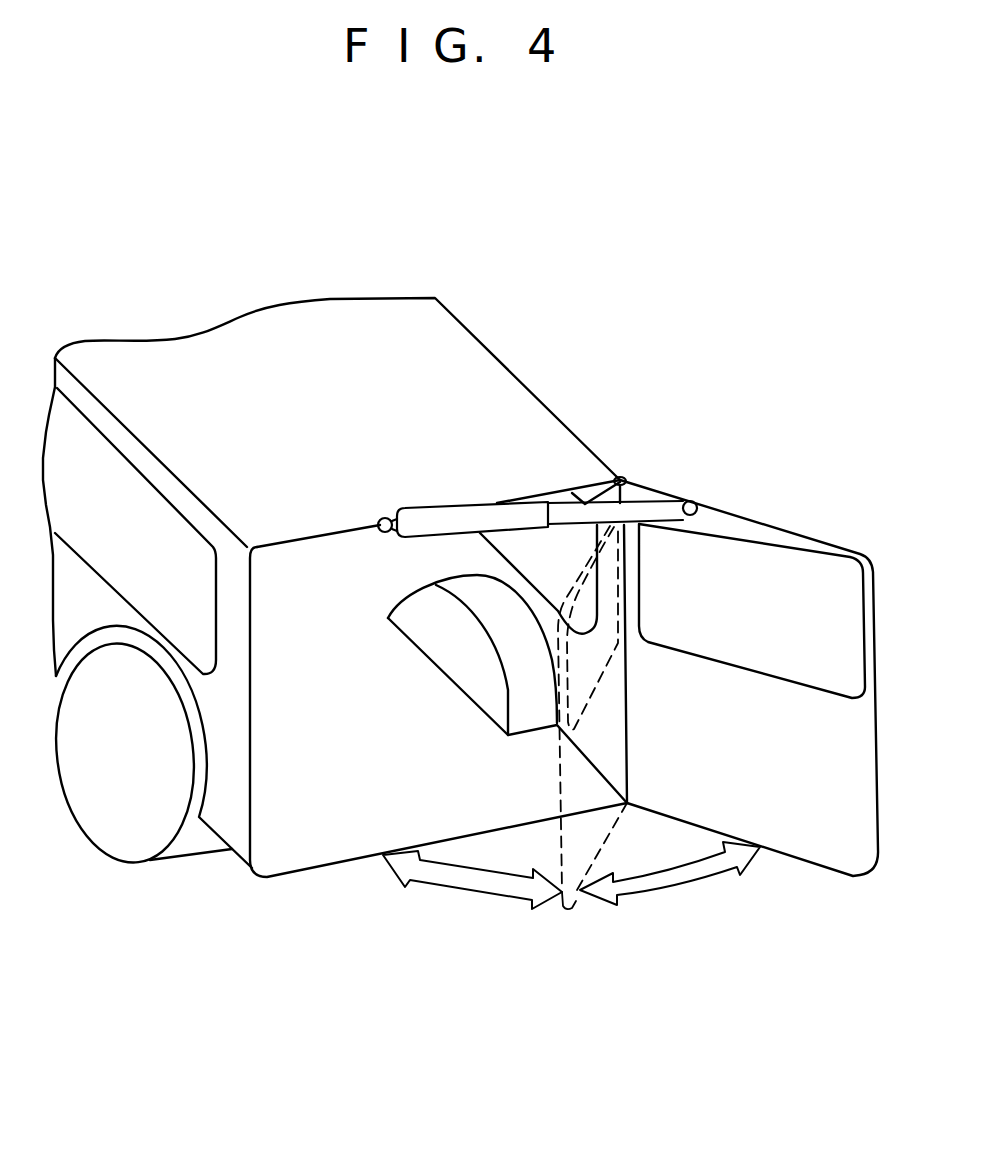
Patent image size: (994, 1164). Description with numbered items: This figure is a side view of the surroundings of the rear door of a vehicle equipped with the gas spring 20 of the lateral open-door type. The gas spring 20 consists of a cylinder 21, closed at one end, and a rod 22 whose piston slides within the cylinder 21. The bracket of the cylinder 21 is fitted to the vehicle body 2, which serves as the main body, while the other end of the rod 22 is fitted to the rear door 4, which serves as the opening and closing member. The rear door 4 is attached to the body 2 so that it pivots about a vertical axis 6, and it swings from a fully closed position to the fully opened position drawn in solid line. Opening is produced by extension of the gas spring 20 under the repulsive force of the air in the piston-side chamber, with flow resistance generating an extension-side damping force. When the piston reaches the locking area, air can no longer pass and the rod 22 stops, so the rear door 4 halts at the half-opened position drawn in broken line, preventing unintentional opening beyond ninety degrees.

The vehicle body 2 is at (480, 340).
The rear door 4 is at (844, 543).
The vertical axis 6 is at (627, 474).
The gas spring 20 is at (565, 462).
The cylinder 21 is at (437, 505).
The rod 22 is at (668, 498).